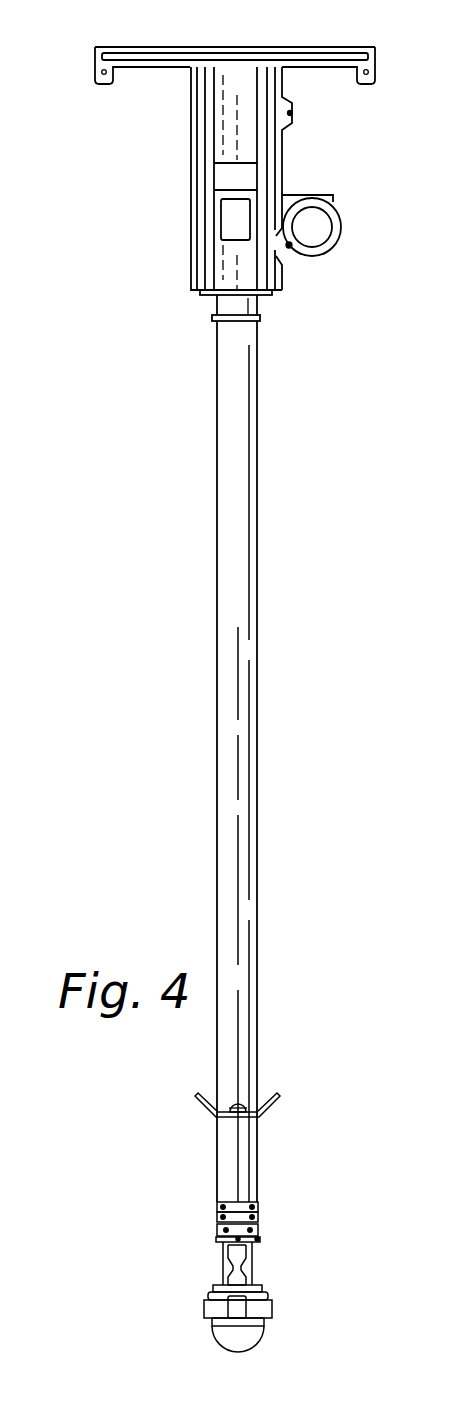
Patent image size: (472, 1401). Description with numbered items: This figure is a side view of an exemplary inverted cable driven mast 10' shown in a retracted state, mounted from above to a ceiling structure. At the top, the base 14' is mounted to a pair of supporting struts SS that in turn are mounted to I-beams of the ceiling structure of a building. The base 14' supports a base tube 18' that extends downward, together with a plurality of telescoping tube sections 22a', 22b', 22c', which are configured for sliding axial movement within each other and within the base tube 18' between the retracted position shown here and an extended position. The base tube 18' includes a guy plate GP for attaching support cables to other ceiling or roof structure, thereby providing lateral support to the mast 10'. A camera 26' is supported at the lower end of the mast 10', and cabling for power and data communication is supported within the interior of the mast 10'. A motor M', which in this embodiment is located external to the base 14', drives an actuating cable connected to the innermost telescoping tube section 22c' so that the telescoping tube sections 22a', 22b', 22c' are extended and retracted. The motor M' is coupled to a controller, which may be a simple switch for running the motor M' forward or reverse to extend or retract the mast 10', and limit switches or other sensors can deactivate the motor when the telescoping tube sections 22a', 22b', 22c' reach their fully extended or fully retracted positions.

The supporting struts SS is at (188, 47).
The base 14' is at (192, 194).
The motor M' is at (347, 225).
The inverted cable driven mast 10' is at (82, 294).
The base tube 18' is at (283, 761).
The guy plate GP is at (197, 1100).
The telescoping tube section 22a' is at (290, 1192).
The telescoping tube section 22b' is at (290, 1227).
The innermost telescoping tube section 22c' is at (289, 1258).
The camera 26' is at (200, 1294).